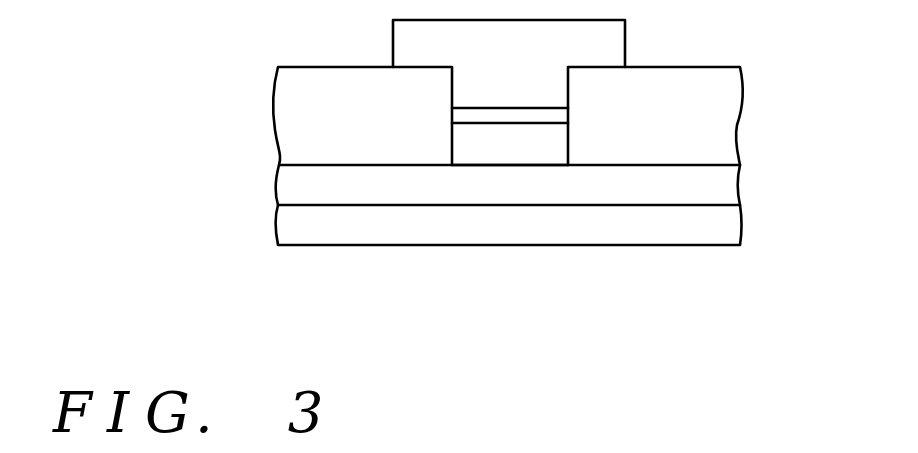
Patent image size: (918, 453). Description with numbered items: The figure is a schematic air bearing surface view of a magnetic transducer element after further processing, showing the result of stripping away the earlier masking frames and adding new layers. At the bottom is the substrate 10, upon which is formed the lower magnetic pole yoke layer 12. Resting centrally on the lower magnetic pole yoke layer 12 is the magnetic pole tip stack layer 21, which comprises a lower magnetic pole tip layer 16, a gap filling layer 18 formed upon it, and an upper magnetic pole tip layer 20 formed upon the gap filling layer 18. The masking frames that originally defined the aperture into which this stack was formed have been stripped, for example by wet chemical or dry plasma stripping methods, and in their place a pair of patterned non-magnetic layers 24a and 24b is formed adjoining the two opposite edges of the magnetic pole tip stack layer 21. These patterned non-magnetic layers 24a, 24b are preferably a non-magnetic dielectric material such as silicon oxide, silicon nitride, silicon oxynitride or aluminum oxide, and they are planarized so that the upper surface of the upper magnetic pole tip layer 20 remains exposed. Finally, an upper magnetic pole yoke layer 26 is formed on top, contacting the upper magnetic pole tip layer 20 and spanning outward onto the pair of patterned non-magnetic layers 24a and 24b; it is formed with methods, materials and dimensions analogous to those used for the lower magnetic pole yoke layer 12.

The substrate 10 is at (288, 233).
The lower magnetic pole yoke layer 12 is at (288, 187).
The lower magnetic pole tip layer 16 is at (468, 152).
The gap filling layer 18 is at (515, 117).
The upper magnetic pole tip layer 20 is at (548, 95).
The magnetic pole tip stack layer 21 is at (595, 308).
The patterned non-magnetic layer 24a is at (288, 102).
The patterned non-magnetic layer 24b is at (732, 99).
The upper magnetic pole yoke layer 26 is at (608, 37).